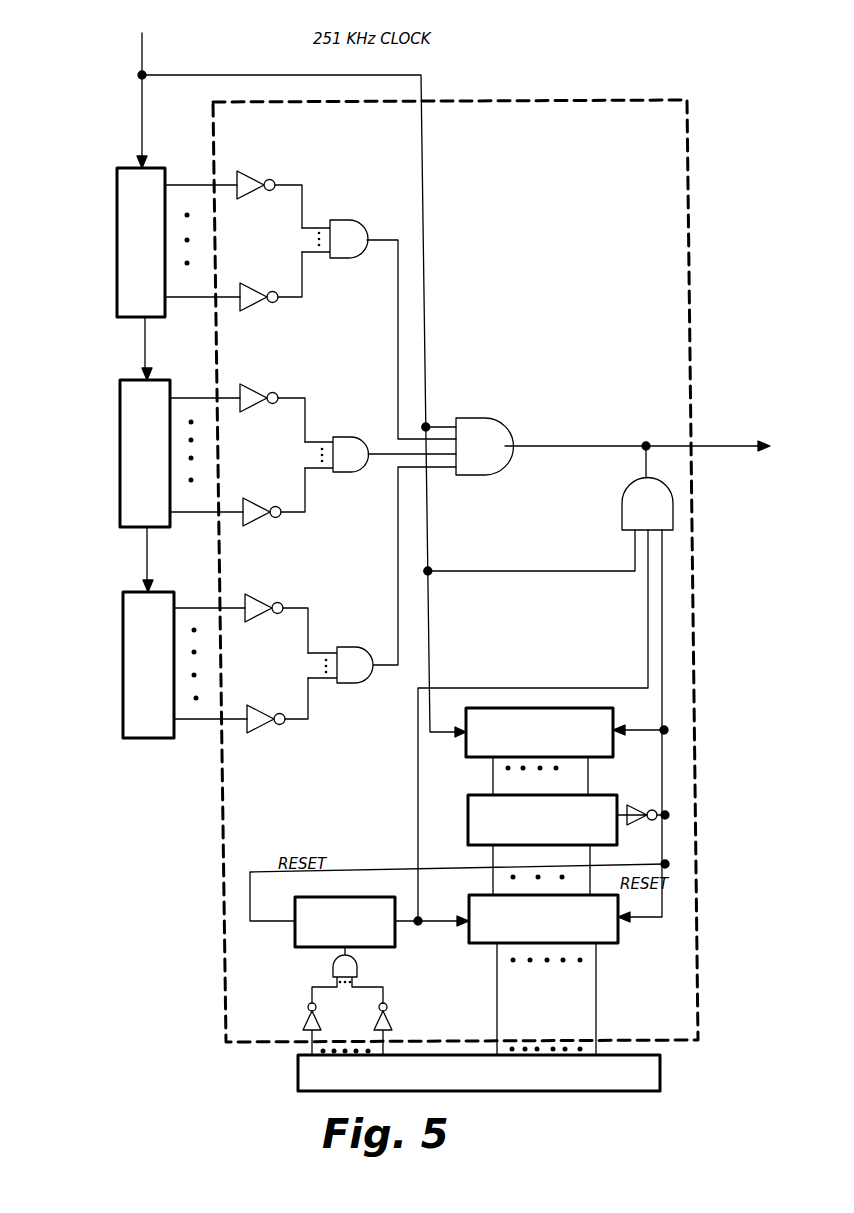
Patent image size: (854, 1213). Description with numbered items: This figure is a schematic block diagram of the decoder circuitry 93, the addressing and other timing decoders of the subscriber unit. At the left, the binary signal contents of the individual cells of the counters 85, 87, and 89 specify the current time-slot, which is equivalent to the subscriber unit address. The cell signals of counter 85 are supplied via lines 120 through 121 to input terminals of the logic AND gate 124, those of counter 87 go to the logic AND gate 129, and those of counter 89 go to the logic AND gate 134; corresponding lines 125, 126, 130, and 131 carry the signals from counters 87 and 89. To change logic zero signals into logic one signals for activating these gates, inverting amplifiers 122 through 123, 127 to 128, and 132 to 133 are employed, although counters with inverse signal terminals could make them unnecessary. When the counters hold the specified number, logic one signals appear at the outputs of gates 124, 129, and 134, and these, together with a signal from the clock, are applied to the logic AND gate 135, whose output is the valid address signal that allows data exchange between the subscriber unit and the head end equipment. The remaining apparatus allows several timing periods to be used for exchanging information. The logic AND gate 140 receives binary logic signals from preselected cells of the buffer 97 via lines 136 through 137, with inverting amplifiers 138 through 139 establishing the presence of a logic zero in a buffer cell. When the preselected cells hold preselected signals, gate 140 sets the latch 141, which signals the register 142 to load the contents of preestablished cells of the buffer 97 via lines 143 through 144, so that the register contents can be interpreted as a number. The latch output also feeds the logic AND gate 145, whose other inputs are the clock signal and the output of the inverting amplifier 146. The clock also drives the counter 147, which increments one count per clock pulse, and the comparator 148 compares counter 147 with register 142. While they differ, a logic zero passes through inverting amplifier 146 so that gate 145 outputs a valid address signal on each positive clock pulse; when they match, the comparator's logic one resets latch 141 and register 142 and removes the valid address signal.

The counter 85 is at (117, 195).
The counter 87 is at (120, 415).
The counter 89 is at (123, 645).
The decoder circuitry 93 is at (346, 102).
The buffer 97 is at (660, 1072).
The line 120 is at (190, 185).
The line 121 is at (192, 297).
The inverting amplifier 122 is at (276, 178).
The inverting amplifier 123 is at (272, 303).
The logic AND gate 124 is at (347, 220).
The line 125 is at (210, 382).
The line 126 is at (204, 512).
The inverting amplifier 127 is at (278, 394).
The inverting amplifier 128 is at (274, 520).
The logic AND gate 129 is at (351, 437).
The line 130 is at (207, 592).
The line 131 is at (203, 722).
The inverting amplifier 132 is at (279, 604).
The inverting amplifier 133 is at (277, 725).
The logic AND gate 134 is at (349, 650).
The logic AND gate 135 is at (477, 418).
The line 136 is at (298, 1055).
The line 137 is at (389, 1049).
The inverting amplifier 138 is at (305, 1016).
The inverting amplifier 139 is at (390, 1012).
The logic AND gate 140 is at (360, 968).
The latch 141 is at (295, 941).
The register 142 is at (618, 937).
The line 143 is at (497, 1027).
The line 144 is at (596, 993).
The logic AND gate 145 is at (622, 488).
The inverting amplifier 146 is at (652, 809).
The counter 147 is at (506, 708).
The comparator 148 is at (468, 815).